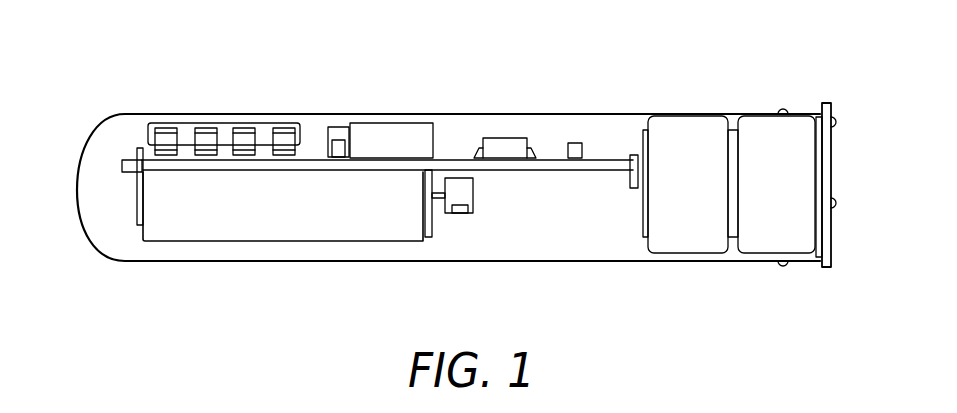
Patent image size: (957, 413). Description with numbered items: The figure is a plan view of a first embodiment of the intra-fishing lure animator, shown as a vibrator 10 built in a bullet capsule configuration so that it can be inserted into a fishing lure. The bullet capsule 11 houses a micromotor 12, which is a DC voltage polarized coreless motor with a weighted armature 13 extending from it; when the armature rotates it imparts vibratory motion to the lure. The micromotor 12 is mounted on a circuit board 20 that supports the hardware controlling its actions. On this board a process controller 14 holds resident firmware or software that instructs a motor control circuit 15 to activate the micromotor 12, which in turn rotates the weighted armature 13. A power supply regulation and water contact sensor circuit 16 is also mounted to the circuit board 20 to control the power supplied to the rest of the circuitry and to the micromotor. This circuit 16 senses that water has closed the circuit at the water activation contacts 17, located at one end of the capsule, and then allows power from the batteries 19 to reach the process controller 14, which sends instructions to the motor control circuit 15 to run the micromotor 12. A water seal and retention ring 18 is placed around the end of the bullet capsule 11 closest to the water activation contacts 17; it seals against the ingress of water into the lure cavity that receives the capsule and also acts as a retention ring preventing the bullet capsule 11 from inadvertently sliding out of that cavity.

The vibrator 10 is at (118, 83).
The bullet capsule 11 is at (88, 233).
The micromotor 12 is at (163, 242).
The weighted armature 13 is at (463, 214).
The process controller 14 is at (182, 123).
The motor control circuit 15 is at (375, 122).
The power supply regulation and water contact sensor circuit 16 is at (533, 138).
The water activation contacts 17 is at (836, 203).
The water seal and retention ring 18 is at (782, 108).
The batteries 19 is at (752, 258).
The circuit board 20 is at (124, 164).